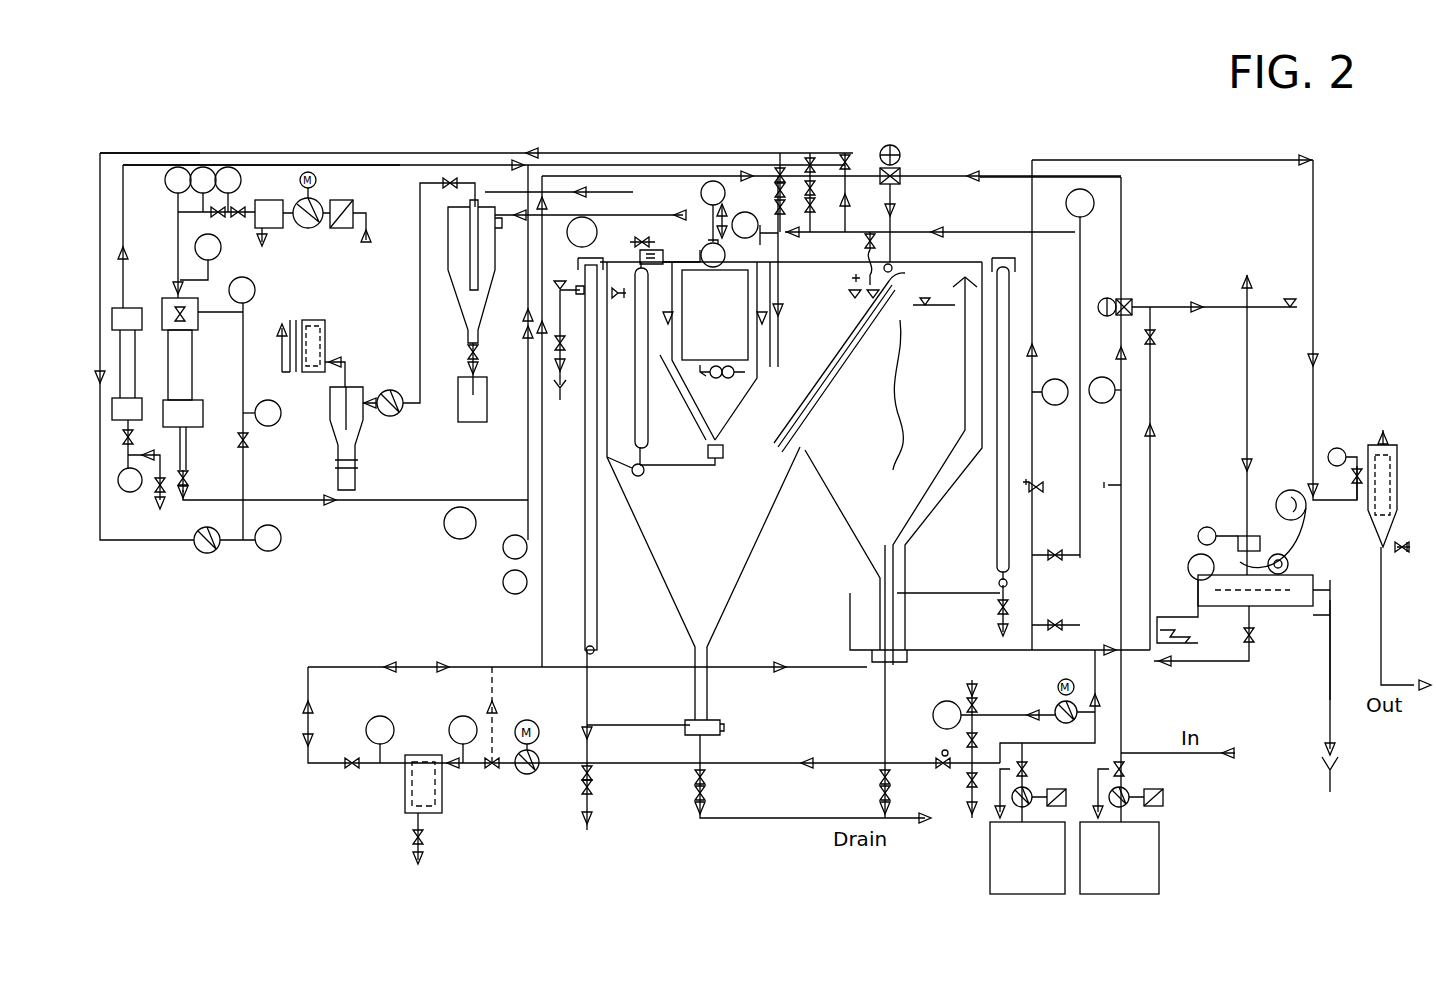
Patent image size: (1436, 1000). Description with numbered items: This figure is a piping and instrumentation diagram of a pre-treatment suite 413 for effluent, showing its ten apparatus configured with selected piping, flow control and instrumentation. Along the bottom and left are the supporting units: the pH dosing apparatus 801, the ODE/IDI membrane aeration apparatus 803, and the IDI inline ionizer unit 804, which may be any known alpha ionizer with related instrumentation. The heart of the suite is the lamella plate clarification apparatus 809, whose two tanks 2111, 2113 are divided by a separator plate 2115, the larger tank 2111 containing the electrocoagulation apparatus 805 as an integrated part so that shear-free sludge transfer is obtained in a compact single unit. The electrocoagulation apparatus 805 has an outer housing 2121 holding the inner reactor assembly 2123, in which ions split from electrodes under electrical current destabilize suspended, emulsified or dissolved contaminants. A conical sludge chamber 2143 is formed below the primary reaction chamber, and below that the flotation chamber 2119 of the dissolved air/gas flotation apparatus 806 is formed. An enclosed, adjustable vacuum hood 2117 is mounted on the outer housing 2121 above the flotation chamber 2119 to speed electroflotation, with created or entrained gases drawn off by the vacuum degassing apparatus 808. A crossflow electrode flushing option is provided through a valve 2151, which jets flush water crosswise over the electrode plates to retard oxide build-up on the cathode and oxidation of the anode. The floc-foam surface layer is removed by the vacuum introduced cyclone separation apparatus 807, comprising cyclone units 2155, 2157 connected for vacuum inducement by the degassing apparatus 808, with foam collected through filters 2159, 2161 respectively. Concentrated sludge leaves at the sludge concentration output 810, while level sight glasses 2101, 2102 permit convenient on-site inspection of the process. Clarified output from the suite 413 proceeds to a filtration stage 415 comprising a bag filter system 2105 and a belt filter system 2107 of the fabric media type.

The pre-treatment suite 413 is at (698, 101).
The vacuum introduced cyclone separation apparatus 807 is at (494, 180).
The enclosed vacuum hood 2117 is at (663, 258).
The dissolved air/gas flotation apparatus 806 is at (727, 257).
The valve 2151 is at (760, 233).
The vacuum degassing apparatus 808 is at (707, 227).
The flotation chamber 2119 is at (684, 260).
The tank 2111 is at (819, 301).
The tank 2113 is at (965, 257).
The IDI inline ionizer unit 804 is at (133, 308).
The ODE/IDI membrane aeration apparatus 803 is at (183, 350).
The filter 2161 is at (343, 312).
The cyclone unit 2157 is at (365, 385).
The cyclone unit 2155 is at (495, 300).
The filter 2159 is at (487, 400).
The inner reactor assembly 2123 is at (752, 353).
The electrocoagulation apparatus 805 is at (717, 358).
The outer housing 2121 is at (658, 355).
The conical sludge chamber 2143 is at (752, 447).
The separator plate 2115 is at (820, 400).
The lamella plate clarification apparatus 809 is at (796, 513).
The sludge concentration output 810 is at (690, 590).
The level sight glass 2101 is at (594, 650).
The level sight glass 2102 is at (997, 520).
The bag filter system 2105 is at (1392, 428).
The belt filter system 2107 is at (1292, 644).
The filtration stage 415 is at (1358, 601).
The pH dosing apparatus 801 is at (1076, 828).